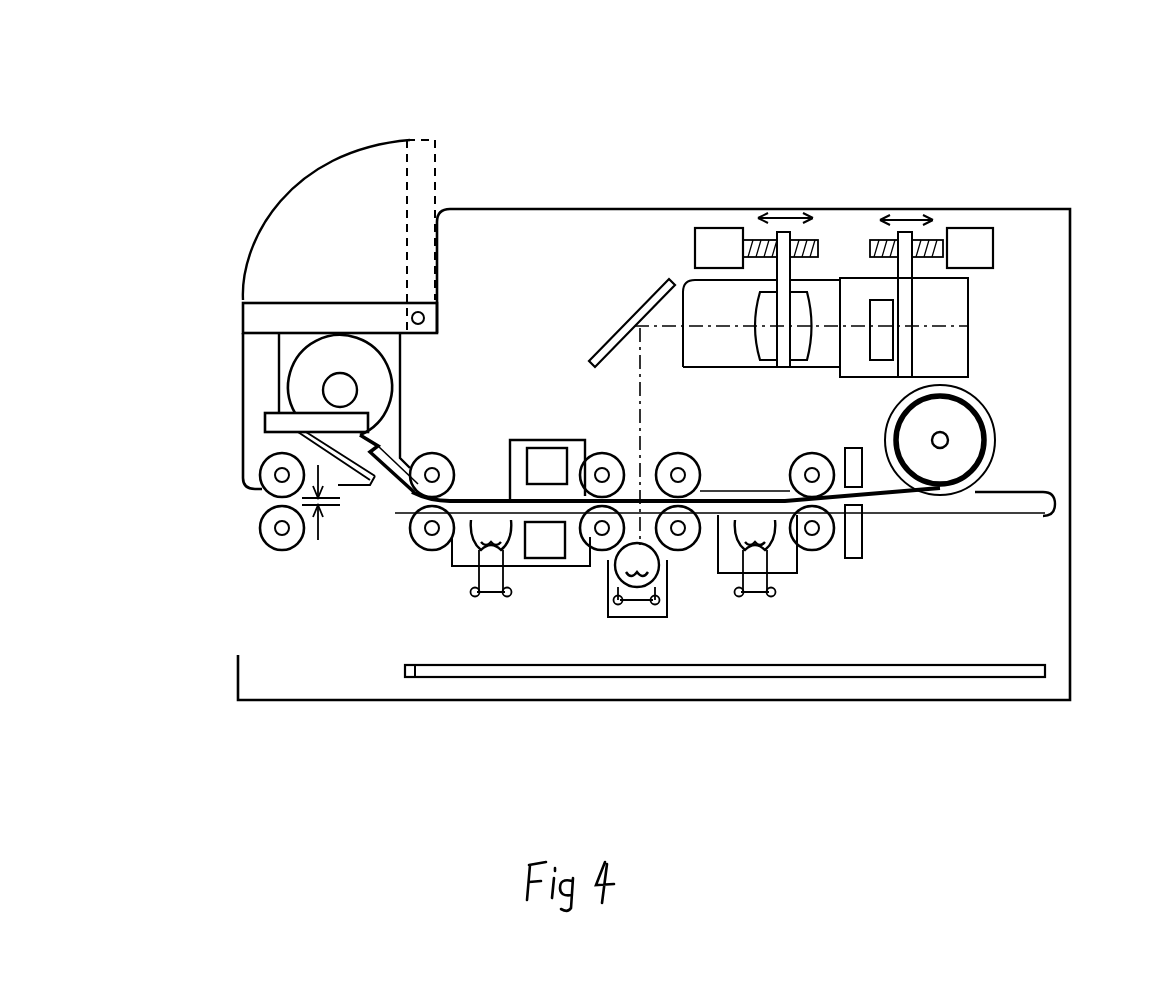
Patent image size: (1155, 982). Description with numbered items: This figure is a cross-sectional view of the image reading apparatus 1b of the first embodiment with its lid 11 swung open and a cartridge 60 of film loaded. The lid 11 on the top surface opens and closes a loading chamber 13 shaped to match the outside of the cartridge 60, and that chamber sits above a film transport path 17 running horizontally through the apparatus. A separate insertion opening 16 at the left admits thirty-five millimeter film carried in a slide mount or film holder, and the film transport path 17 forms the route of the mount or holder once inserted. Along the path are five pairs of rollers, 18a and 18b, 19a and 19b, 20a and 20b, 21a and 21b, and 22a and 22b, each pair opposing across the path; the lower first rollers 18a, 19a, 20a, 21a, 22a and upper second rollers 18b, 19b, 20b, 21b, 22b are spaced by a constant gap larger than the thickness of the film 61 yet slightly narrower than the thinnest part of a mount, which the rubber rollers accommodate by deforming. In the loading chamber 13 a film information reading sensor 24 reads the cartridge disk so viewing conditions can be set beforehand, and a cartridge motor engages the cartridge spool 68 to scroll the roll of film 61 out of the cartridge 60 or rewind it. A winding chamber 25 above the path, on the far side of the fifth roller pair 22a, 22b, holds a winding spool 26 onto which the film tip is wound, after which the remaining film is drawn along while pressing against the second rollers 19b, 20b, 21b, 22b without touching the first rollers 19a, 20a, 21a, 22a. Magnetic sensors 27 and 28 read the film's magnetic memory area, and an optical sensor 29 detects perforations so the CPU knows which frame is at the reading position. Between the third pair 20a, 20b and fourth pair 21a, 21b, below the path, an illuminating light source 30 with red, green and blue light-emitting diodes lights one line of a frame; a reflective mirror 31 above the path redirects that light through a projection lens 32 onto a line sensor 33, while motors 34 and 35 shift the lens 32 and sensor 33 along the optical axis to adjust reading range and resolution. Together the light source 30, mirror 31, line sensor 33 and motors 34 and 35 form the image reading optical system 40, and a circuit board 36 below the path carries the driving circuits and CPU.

The printer housing 1b is at (1033, 205).
The lid 11 is at (270, 318).
The loading chamber 13 is at (285, 363).
The insertion opening 16 is at (266, 492).
The film transport path 17 is at (477, 495).
The first roller 18a is at (266, 548).
The second roller 18b is at (262, 494).
The first roller 19a is at (414, 546).
The second roller 19b is at (412, 490).
The first roller 20a is at (586, 547).
The second roller 20b is at (584, 491).
The first roller 21a is at (697, 547).
The second roller 21b is at (695, 491).
The first roller 22a is at (830, 548).
The second roller 22b is at (829, 492).
The film information reading sensor 24 is at (292, 425).
The winding chamber 25 is at (984, 462).
The winding spool 26 is at (950, 436).
The magnetic sensor 27 is at (478, 605).
The magnetic sensor 28 is at (757, 605).
The optical sensor 29 is at (525, 524).
The illuminating light source 30 is at (640, 543).
The reflective mirror 31 is at (668, 281).
The projection lens 32 is at (800, 312).
The line sensor 33 is at (870, 312).
The motor 34 is at (740, 228).
The motor 35 is at (970, 228).
The circuit board 36 is at (1010, 677).
The image reading optical system 40 is at (960, 138).
The cartridge 60 is at (367, 346).
The roll of film 61 is at (870, 495).
The cartridge spool 68 is at (335, 385).